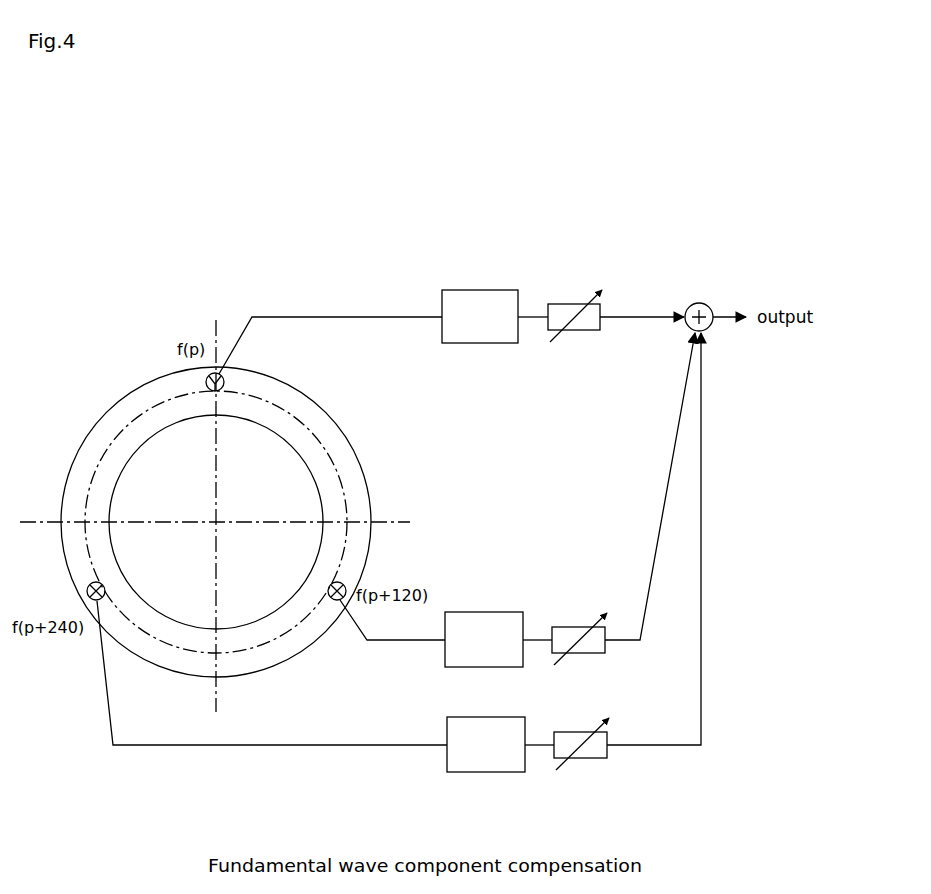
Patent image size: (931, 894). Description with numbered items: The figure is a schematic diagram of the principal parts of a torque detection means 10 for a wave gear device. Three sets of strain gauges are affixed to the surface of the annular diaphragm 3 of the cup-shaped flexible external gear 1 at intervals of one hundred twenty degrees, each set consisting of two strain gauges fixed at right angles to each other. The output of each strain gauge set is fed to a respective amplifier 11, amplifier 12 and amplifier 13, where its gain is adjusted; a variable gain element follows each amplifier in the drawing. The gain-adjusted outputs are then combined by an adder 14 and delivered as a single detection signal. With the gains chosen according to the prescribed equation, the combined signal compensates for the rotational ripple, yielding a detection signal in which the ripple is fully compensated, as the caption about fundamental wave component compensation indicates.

The cup-shaped flexible external gear 1 is at (116, 387).
The annular diaphragm 3 is at (92, 445).
The torque detection means 10 is at (510, 281).
The amplifier 11 is at (460, 344).
The amplifier 12 is at (462, 625).
The amplifier 13 is at (466, 716).
The adder 14 is at (701, 303).